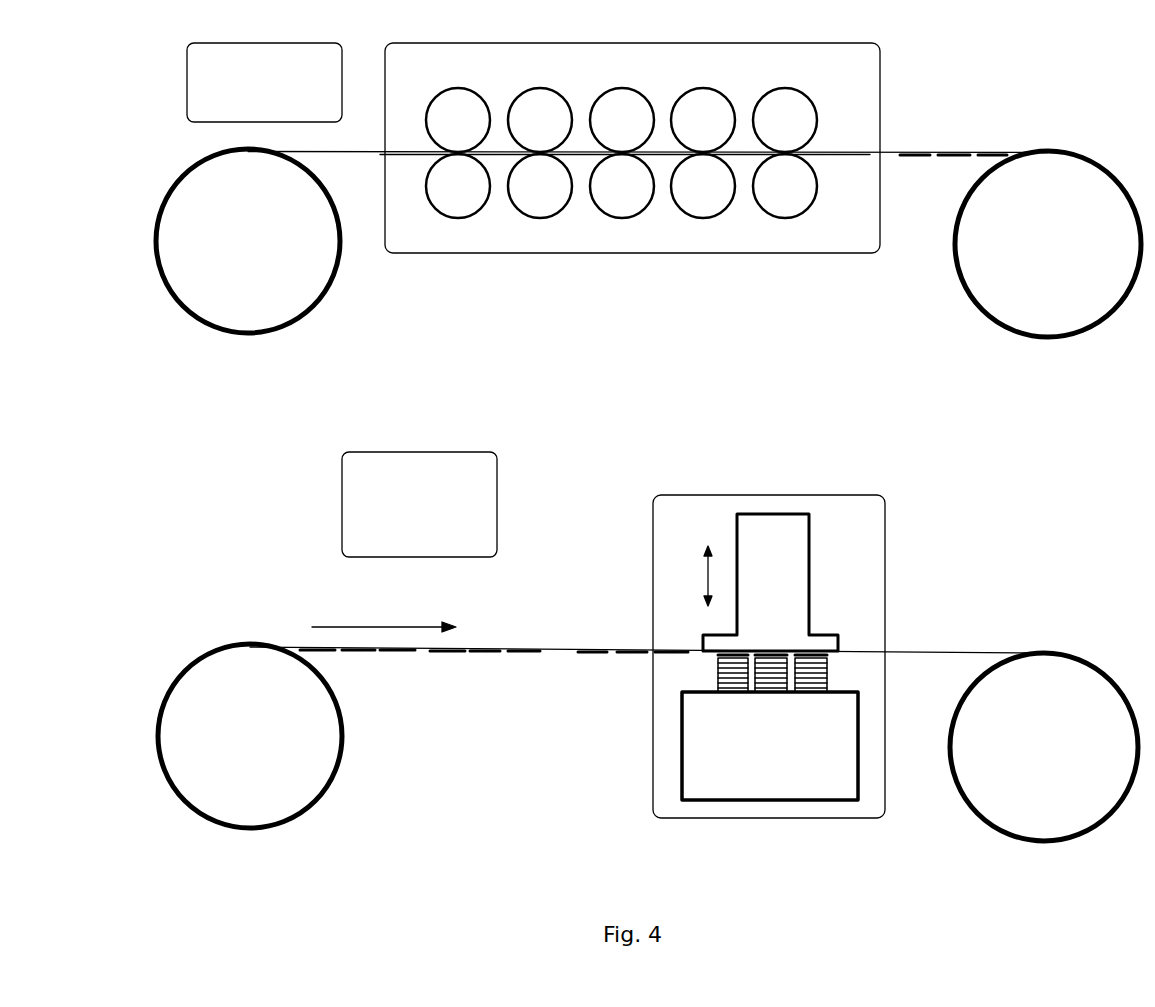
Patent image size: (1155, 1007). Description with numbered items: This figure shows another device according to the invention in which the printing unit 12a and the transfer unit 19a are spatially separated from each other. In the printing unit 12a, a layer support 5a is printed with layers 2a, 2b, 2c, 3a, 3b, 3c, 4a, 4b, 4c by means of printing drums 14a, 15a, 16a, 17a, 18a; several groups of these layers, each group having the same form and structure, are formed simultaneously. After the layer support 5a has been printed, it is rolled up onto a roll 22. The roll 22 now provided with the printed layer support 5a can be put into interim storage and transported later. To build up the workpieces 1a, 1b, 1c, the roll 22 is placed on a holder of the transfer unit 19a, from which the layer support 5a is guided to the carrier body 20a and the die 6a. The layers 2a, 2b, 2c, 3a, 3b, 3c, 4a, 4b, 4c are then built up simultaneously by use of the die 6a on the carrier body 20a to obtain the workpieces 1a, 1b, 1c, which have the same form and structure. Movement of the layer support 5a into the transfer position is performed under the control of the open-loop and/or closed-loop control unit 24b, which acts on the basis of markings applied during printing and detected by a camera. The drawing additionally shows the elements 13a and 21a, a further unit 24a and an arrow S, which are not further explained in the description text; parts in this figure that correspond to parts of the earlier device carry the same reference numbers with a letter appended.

The workpiece 1a is at (733, 693).
The workpiece 1b is at (768, 693).
The workpiece 1c is at (815, 693).
The layer 2a is at (778, 157).
The layer 2b is at (817, 157).
The layer 2c is at (853, 157).
The layer 3a is at (923, 152).
The layer 3b is at (962, 152).
The layer 3c is at (1007, 152).
The layer 4a is at (743, 650).
The layer 4b is at (787, 651).
The layer 4c is at (833, 660).
The layer support 5a is at (360, 155).
The die 6a is at (780, 538).
The printing unit 12a is at (882, 70).
The unwinding roller 13a is at (200, 322).
The printing drum 14a is at (465, 215).
The printing drum 15a is at (547, 215).
The printing drum 16a is at (630, 217).
The printing drum 17a is at (703, 218).
The printing drum 18a is at (778, 217).
The transfer unit 19a is at (700, 495).
The carrier body 20a is at (682, 772).
The winding roller 21a is at (1080, 842).
The roll 22 is at (1072, 337).
The first control unit 24a is at (294, 97).
The open-loop and/or closed-loop control unit 24b is at (447, 524).
The stroke direction S is at (694, 576).